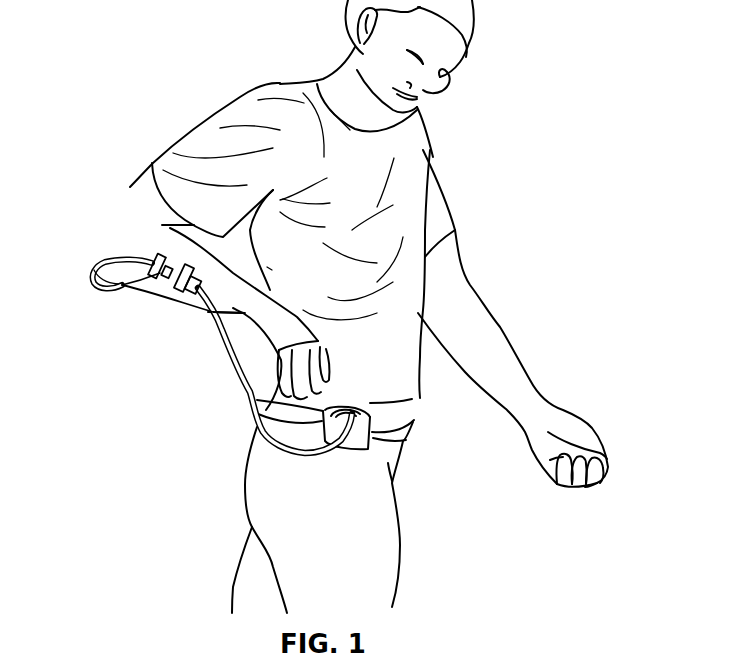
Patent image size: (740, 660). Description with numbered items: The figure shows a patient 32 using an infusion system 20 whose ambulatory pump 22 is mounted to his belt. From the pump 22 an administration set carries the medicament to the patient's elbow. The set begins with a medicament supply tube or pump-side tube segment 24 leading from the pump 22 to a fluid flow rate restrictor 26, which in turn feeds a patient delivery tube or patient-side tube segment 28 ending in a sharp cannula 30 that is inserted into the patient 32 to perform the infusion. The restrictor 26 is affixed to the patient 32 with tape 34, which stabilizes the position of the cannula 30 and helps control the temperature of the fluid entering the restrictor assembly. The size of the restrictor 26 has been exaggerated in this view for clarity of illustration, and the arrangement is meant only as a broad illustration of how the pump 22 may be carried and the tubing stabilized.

The infusion system 20 is at (124, 377).
The pump 22 is at (354, 452).
The pump-side tube segment 24 is at (238, 373).
The fluid flow rate restrictor 26 is at (152, 291).
The patient-side tube segment 28 is at (92, 270).
The sharp cannula 30 is at (106, 254).
The patient 32 is at (413, 140).
The tape 34 is at (168, 298).